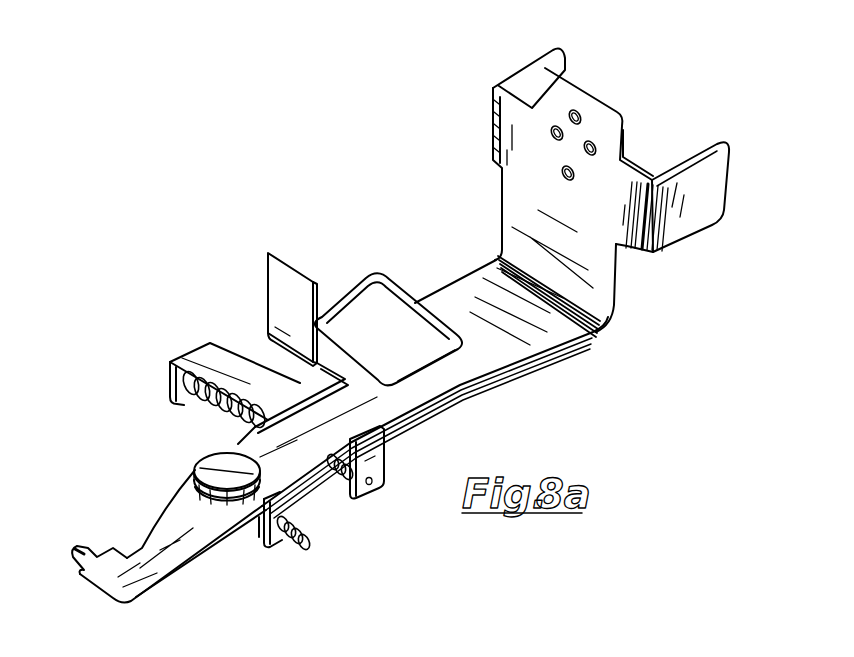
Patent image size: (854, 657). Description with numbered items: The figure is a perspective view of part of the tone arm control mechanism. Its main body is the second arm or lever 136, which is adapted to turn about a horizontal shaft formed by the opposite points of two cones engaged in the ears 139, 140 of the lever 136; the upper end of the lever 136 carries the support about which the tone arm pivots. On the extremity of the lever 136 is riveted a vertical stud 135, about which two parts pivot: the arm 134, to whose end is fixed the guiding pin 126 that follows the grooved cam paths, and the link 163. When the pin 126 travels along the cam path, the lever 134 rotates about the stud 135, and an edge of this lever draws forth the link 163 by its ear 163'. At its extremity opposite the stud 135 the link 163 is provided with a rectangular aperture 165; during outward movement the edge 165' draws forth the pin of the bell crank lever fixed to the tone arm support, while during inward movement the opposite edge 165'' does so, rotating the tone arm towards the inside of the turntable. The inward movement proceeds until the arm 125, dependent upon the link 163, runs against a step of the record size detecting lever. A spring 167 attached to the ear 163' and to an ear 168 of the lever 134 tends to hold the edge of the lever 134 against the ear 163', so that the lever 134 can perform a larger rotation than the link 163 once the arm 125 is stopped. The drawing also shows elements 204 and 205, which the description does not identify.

The ear 139 is at (608, 35).
The ear 140 is at (782, 170).
The second arm 136 is at (590, 390).
The rectangular aperture 165 is at (388, 329).
The edge of the aperture 165' is at (388, 288).
The edge of the aperture 165'' is at (418, 356).
The arm 125 is at (244, 261).
The ear 168 is at (154, 364).
The spring 167 is at (155, 410).
The stud 135 is at (180, 453).
The arm 134 is at (160, 500).
The guiding pin 126 is at (77, 533).
The link 163 is at (321, 503).
The ear 163' is at (402, 462).
The spring 204 is at (366, 572).
The spring 205 is at (262, 557).